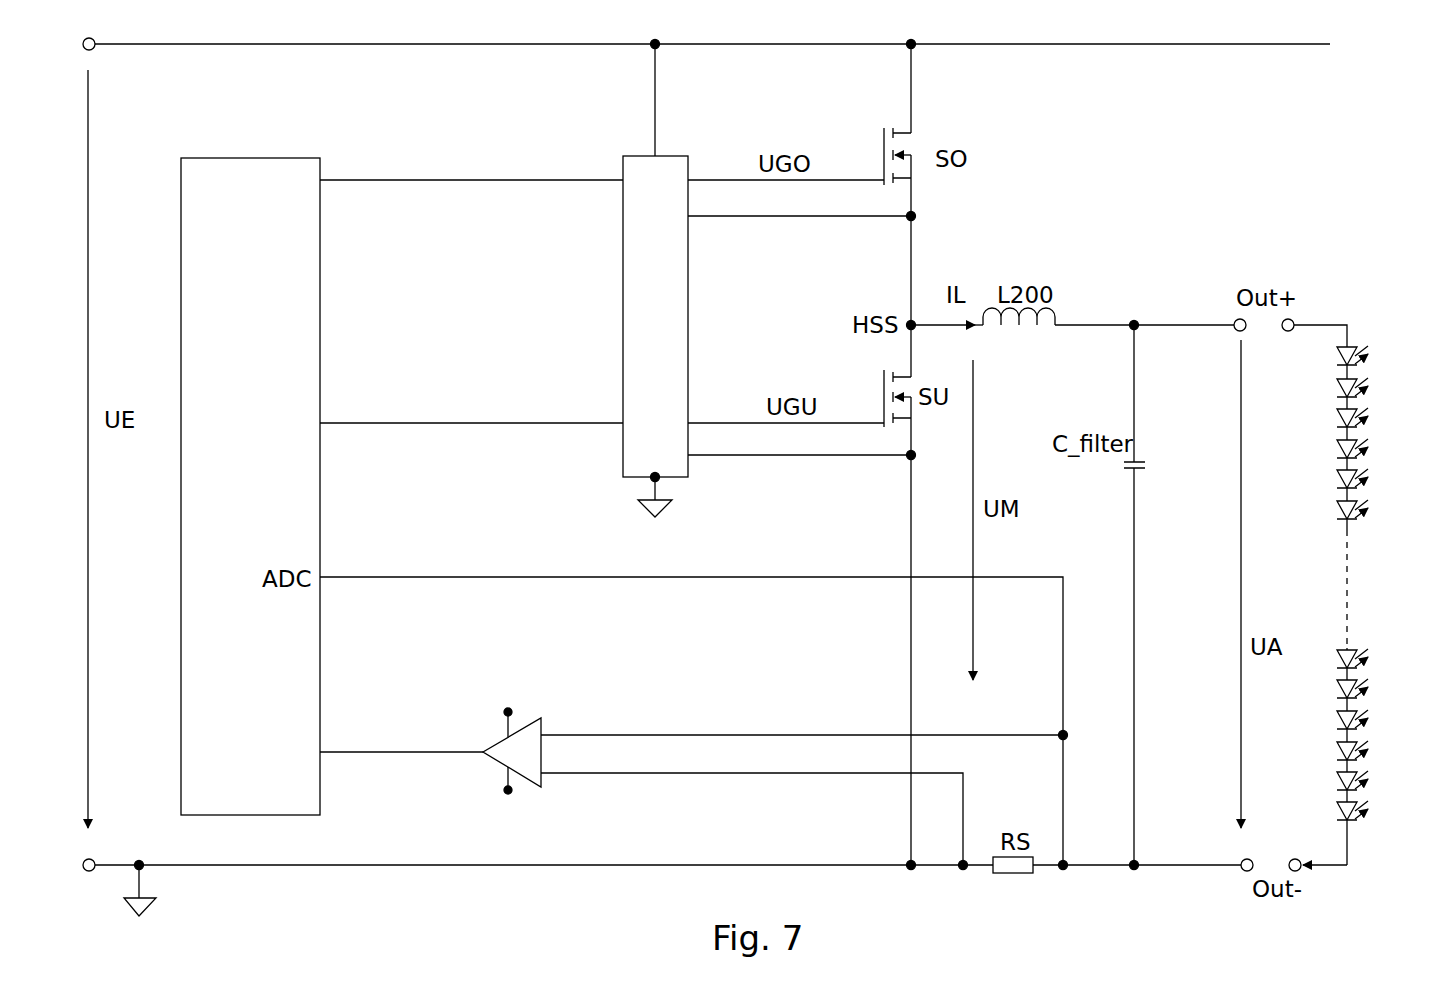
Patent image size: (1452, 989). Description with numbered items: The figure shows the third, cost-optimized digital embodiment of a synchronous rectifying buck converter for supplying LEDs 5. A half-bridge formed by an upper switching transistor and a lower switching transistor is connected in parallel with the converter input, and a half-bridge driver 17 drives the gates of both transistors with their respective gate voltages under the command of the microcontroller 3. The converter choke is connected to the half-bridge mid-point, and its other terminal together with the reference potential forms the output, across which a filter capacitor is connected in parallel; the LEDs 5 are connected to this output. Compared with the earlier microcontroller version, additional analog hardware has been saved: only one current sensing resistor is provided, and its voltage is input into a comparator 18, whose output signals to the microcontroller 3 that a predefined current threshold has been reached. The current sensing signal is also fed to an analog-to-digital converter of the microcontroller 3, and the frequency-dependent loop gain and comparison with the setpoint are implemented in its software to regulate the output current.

The microcontroller 3 is at (250, 486).
The half-bridge driver 17 is at (655, 336).
The comparator 18 is at (522, 778).
The LEDs 5 is at (1356, 317).